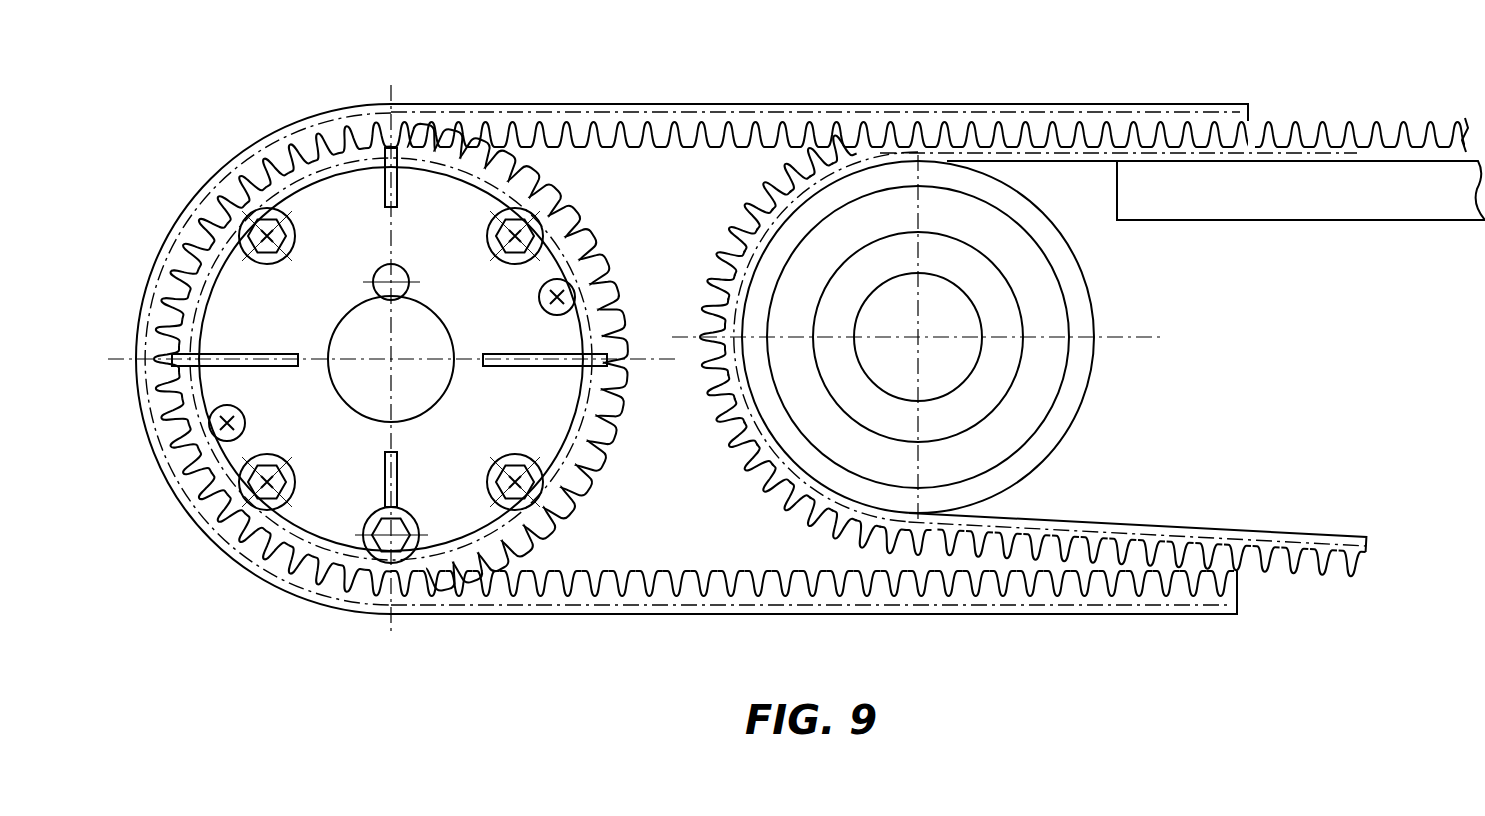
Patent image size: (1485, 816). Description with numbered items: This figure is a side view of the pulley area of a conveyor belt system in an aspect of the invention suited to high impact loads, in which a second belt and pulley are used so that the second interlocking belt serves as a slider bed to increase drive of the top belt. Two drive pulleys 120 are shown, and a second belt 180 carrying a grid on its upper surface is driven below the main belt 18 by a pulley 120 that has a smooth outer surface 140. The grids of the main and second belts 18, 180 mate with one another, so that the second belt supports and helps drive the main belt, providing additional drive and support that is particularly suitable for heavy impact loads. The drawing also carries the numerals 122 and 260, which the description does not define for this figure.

The main belt 18 is at (960, 95).
The drive pulley 120 is at (337, 192).
The hub 122 is at (882, 202).
The smooth outer surface 140 is at (1095, 393).
The second belt 180 is at (1378, 146).
The toothed belt segment 260 is at (1318, 533).